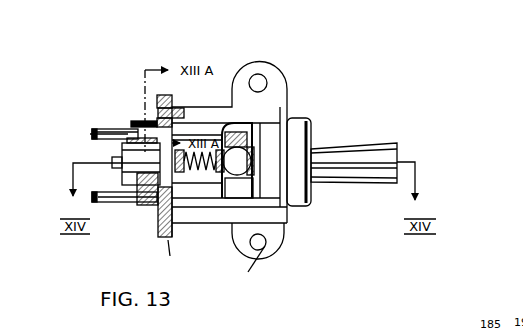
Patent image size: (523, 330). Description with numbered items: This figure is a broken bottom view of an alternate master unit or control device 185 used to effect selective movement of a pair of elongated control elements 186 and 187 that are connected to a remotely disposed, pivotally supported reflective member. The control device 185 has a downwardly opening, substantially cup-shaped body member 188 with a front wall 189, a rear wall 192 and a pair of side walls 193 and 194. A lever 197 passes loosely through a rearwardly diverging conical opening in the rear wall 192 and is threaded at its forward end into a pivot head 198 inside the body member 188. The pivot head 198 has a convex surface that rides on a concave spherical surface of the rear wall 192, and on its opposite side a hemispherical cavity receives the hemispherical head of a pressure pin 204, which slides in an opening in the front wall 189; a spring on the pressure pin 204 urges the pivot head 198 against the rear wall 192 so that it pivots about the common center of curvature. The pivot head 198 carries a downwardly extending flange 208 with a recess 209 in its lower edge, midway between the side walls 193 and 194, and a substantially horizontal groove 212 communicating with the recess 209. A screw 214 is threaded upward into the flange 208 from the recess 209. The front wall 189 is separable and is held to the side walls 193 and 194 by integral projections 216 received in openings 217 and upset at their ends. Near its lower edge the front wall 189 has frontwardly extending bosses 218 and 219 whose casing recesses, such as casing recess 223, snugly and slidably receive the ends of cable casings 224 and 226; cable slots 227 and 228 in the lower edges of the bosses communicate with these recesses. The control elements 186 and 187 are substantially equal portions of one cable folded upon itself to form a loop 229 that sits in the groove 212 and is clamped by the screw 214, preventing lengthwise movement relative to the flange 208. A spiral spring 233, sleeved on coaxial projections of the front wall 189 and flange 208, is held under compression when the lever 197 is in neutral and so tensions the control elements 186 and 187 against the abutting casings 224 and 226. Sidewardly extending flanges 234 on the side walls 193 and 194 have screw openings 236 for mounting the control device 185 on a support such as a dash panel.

The control device 185 is at (304, 110).
The control element 186 is at (90, 135).
The control element 187 is at (92, 200).
The body member 188 is at (288, 214).
The front wall 189 is at (175, 257).
The rear wall 192 is at (305, 198).
The side wall 193 is at (218, 112).
The side wall 194 is at (220, 218).
The lever 197 is at (395, 155).
The pivot head 198 is at (256, 185).
The pressure pin 204 is at (95, 173).
The flange 208 is at (233, 190).
The recess 209 is at (226, 176).
The groove 212 is at (233, 133).
The screw 214 is at (250, 158).
The projections 216 is at (178, 107).
The openings 217 is at (145, 117).
The boss 218 is at (153, 122).
The boss 219 is at (165, 214).
The casing recess 223 is at (136, 200).
The cable casing 224 is at (122, 140).
The cable casing 226 is at (140, 192).
The cable slot 227 is at (128, 126).
The cable slot 228 is at (190, 214).
The loop 229 is at (248, 148).
The spiral spring 233 is at (172, 157).
The flanges 234 is at (265, 76).
The screw openings 236 is at (243, 269).